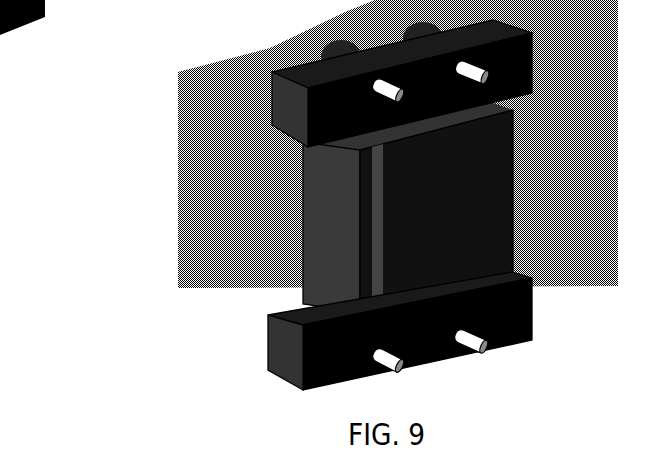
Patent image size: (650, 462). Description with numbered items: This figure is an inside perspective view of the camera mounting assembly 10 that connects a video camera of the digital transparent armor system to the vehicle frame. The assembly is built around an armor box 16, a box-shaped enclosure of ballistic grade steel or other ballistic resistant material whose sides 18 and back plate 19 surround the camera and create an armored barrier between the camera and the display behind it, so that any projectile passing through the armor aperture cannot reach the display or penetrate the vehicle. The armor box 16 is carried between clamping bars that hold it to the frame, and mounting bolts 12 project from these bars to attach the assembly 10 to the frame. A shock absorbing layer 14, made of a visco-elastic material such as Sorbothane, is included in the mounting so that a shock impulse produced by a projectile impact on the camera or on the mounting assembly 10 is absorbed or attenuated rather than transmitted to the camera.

The camera mounting assembly 10 is at (98, 222).
The mounting bolts 12 is at (480, 350).
The shock absorbing layer 14 is at (290, 361).
The armor box 16 is at (546, 148).
The sides 18 is at (323, 227).
The back plate 19 is at (470, 197).